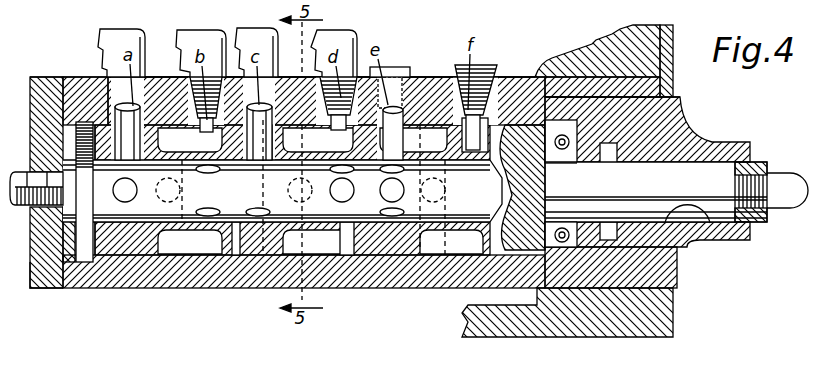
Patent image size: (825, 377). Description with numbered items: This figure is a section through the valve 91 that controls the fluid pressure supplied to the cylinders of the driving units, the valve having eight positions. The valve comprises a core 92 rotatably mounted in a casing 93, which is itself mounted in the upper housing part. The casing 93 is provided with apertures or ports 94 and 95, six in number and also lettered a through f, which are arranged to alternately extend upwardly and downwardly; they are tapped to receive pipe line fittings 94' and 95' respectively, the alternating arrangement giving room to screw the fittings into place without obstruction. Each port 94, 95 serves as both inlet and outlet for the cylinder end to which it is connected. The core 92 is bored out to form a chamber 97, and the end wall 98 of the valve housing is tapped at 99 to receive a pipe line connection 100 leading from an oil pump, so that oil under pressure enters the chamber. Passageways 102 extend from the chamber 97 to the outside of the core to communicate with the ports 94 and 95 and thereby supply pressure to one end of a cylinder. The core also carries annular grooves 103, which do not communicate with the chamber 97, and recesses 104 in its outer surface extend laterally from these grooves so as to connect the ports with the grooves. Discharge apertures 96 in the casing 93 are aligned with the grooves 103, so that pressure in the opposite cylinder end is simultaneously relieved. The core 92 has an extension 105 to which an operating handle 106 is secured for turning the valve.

The valve 91 is at (712, 140).
The core 92 is at (148, 252).
The casing 93 is at (388, 289).
The aperture 94 is at (358, 97).
The pipe line fitting 94' is at (348, 41).
The aperture 95 is at (241, 102).
The pipe line fitting 95' is at (257, 52).
The discharge aperture 96 is at (181, 191).
The bore 97 is at (235, 254).
The end wall 98 is at (40, 290).
The tapped opening 99 is at (43, 213).
The pipe line connection 100 is at (21, 185).
The passageway 102 is at (131, 161).
The annular groove 103 is at (180, 140).
The recess 104 is at (203, 243).
The extension 105 is at (688, 200).
The operating handle 106 is at (740, 141).